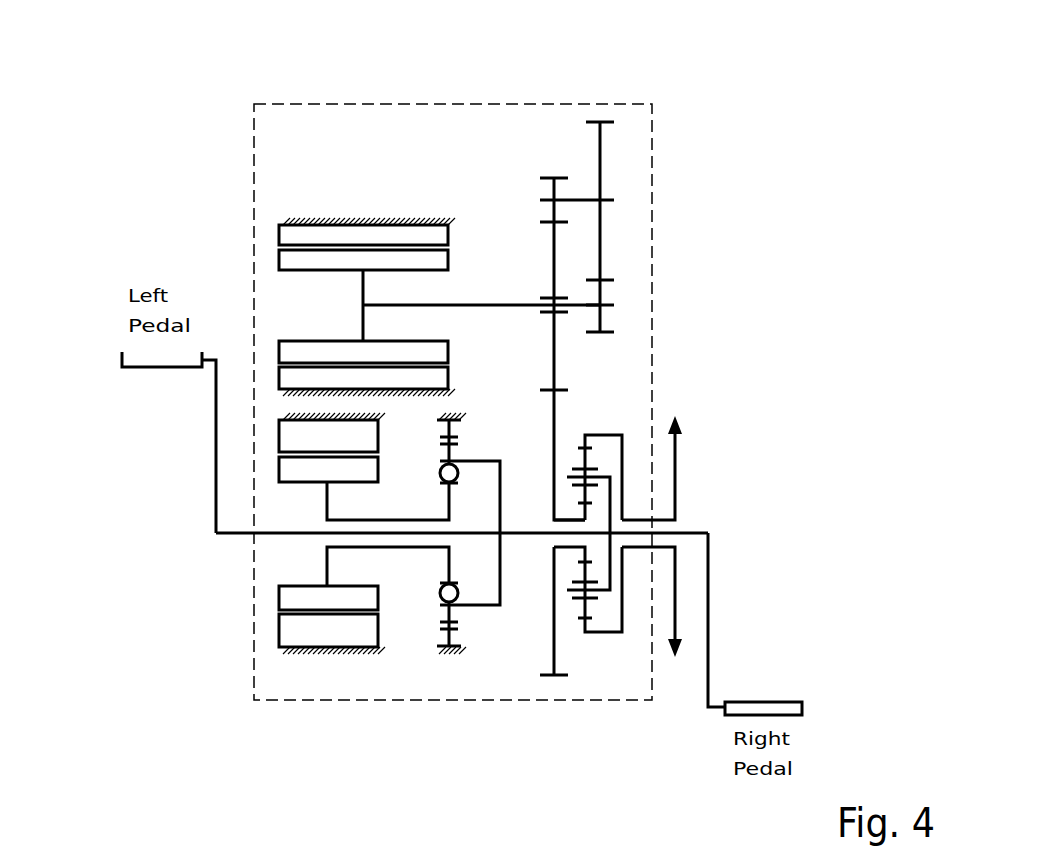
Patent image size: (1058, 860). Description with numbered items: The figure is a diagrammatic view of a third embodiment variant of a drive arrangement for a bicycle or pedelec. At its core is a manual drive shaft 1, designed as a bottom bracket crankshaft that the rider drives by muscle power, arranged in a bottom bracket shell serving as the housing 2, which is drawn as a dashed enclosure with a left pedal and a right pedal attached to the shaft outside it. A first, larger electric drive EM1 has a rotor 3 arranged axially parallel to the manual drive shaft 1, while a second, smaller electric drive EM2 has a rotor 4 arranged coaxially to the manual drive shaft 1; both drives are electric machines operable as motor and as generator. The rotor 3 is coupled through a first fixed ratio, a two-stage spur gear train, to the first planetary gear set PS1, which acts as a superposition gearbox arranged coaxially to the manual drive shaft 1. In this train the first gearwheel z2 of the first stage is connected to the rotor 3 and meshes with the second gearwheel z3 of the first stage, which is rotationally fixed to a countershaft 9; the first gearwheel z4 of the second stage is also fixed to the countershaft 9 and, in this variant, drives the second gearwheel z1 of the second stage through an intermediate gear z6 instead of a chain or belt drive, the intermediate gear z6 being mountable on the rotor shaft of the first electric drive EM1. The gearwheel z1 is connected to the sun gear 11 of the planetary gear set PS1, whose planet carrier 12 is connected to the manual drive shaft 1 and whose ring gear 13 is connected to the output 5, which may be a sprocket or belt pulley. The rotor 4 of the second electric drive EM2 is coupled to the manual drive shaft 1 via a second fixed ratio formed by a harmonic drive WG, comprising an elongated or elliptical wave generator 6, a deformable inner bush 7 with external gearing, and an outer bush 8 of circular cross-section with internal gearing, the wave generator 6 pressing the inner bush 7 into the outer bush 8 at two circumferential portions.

The manual drive shaft 1 is at (278, 537).
The housing 2 is at (253, 645).
The rotor 3 is at (486, 302).
The rotor 4 is at (327, 493).
The output 5 is at (678, 473).
The wave generator 6 is at (450, 565).
The inner bush 7 is at (488, 608).
The outer bush 8 is at (453, 640).
The countershaft 9 is at (585, 200).
The sun gear 11 is at (588, 513).
The planet carrier 12 is at (603, 476).
The ring gear 13 is at (590, 434).
The second gearwheel of the second stage z1 is at (555, 637).
The first gearwheel of the first stage z2 is at (600, 318).
The second gearwheel of the first stage z3 is at (602, 182).
The first gearwheel of the second stage z4 is at (552, 282).
The intermediate gear z6 is at (554, 361).
The first electric drive EM1 is at (331, 211).
The second electric drive EM2 is at (293, 657).
The harmonic drive WG is at (449, 657).
The first planetary gear set PS1 is at (588, 637).